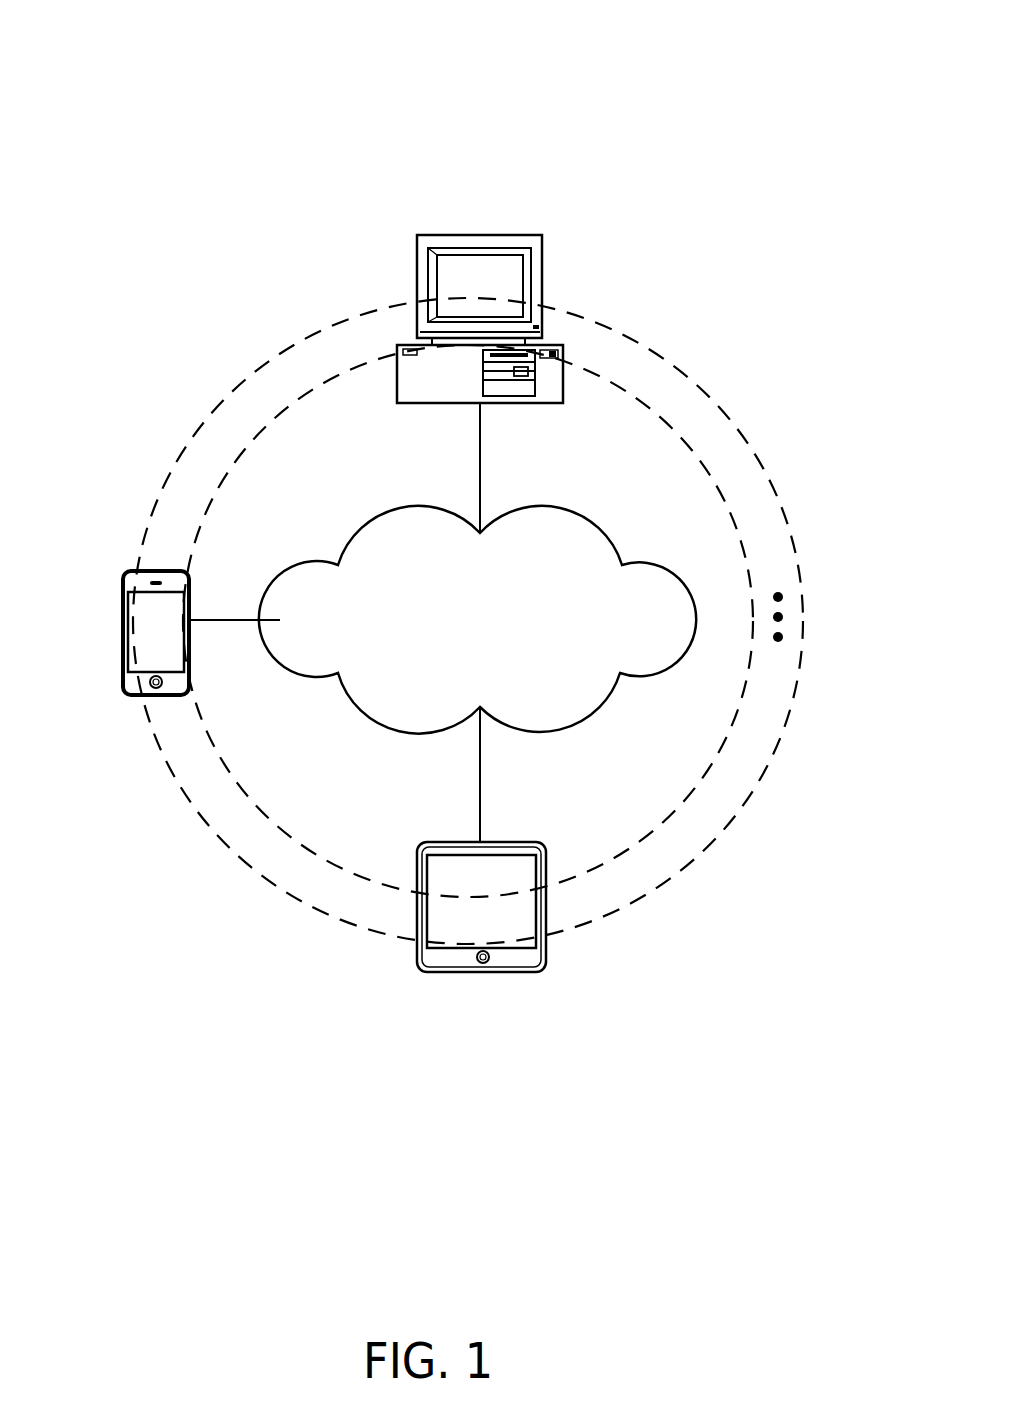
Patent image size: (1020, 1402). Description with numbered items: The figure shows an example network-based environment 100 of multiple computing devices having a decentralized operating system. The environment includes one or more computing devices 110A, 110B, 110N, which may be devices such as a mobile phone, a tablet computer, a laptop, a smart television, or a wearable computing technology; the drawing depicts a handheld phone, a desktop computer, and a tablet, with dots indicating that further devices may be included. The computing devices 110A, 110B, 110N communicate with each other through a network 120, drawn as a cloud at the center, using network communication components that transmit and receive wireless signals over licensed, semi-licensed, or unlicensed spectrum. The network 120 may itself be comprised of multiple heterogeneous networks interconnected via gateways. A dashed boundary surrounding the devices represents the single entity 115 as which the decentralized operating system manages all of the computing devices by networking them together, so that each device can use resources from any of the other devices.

The network-based environment 100 is at (823, 63).
The single entity 115 is at (233, 857).
The network 120 is at (458, 649).
The computing device 110A is at (121, 594).
The computing device 110B is at (543, 265).
The computing device 110N is at (418, 960).